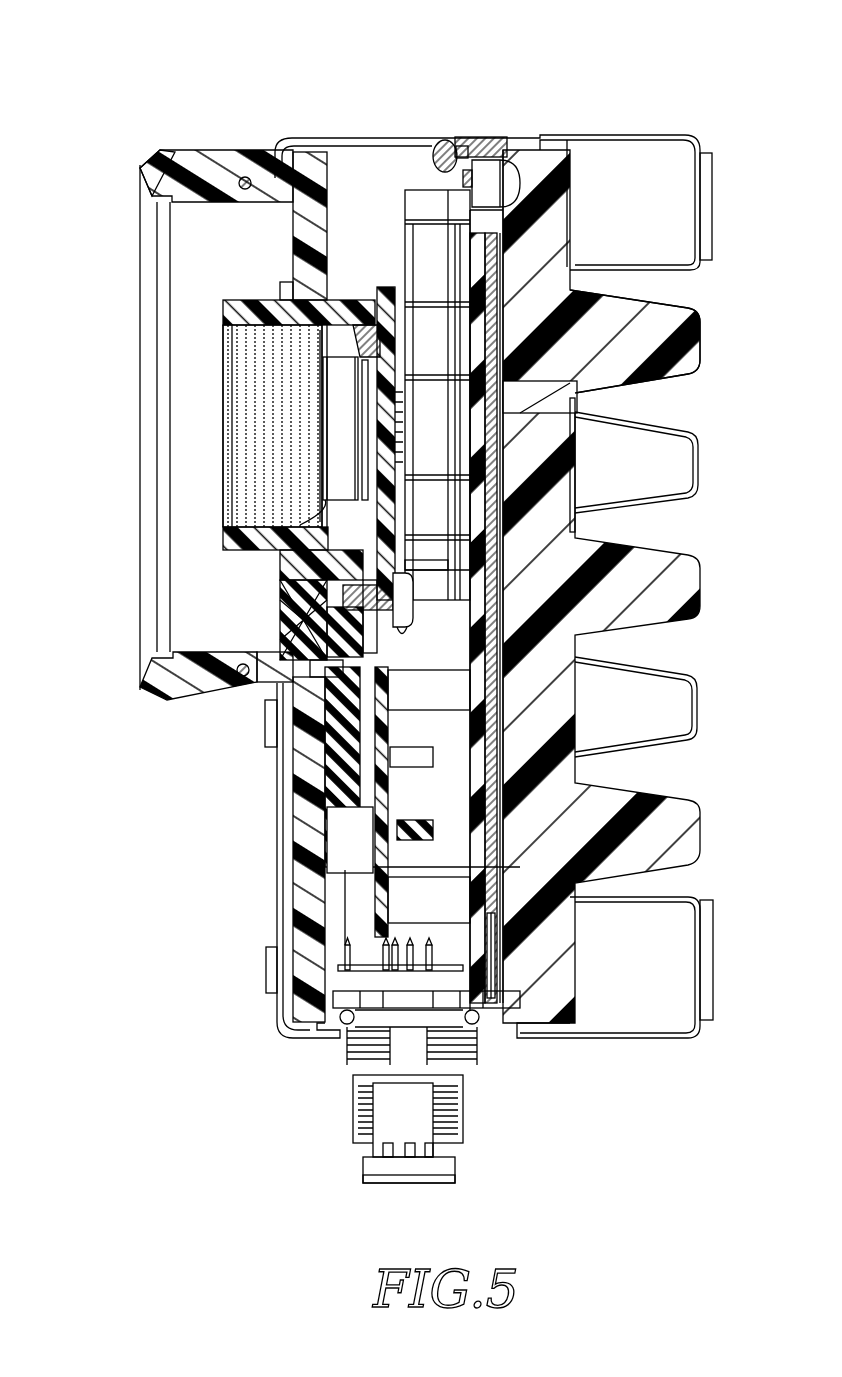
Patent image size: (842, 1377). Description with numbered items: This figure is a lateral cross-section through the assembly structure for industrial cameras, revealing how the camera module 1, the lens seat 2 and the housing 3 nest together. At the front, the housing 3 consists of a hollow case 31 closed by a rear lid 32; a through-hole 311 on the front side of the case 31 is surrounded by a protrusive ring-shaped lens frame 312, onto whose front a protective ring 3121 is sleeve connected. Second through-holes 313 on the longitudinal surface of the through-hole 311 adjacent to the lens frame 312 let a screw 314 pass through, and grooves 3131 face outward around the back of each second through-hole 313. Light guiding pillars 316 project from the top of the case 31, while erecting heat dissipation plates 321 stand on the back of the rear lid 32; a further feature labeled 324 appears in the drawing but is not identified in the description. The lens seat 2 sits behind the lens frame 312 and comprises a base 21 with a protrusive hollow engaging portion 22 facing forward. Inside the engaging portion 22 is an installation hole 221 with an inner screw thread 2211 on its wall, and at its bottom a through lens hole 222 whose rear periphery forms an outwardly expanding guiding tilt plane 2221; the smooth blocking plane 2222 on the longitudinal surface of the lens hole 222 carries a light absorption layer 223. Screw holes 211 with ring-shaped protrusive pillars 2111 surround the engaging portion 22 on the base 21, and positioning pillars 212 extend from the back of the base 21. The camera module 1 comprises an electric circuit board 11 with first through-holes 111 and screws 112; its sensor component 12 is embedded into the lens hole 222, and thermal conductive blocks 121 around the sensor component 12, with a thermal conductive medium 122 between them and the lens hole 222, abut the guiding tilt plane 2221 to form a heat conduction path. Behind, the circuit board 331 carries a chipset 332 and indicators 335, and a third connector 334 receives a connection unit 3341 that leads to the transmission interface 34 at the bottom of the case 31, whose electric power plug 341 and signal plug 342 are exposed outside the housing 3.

The camera module 1 is at (448, 439).
The electric circuit board 11 is at (577, 458).
The first through-holes 111 is at (448, 563).
The screws 112 is at (425, 605).
The sensor component 12 is at (228, 372).
The thermal conductive blocks 121 is at (358, 335).
The thermal conductive medium 122 is at (340, 322).
The lens seat 2 is at (406, 471).
The base 21 is at (346, 288).
The screw holes 211 is at (212, 620).
The ring-shaped protrusive pillars 2111 is at (330, 603).
The positioning pillars 212 is at (410, 645).
The engaging portion 22 is at (300, 322).
The installation hole 221 is at (148, 426).
The inner screw thread 2211 is at (248, 468).
The lens hole 222 is at (194, 431).
The guiding tilt plane 2221 is at (330, 490).
The blocking plane 2222 is at (325, 520).
The light absorption layer 223 is at (290, 552).
The housing 3 is at (416, 615).
The case 31 is at (392, 158).
The through-hole 311 is at (289, 279).
The lens frame 312 is at (201, 149).
The protective ring 3121 is at (167, 162).
The second through-holes 313 is at (202, 703).
The grooves 3131 is at (292, 680).
The screw 314 is at (230, 673).
The light guiding pillars 316 is at (446, 141).
The rear lid 32 is at (636, 571).
The heat dissipation plates 321 is at (670, 323).
The locking block 324 is at (475, 172).
The circuit board 331 is at (490, 400).
The chipset 332 is at (575, 530).
The third connector 334 is at (557, 663).
The connection unit 3341 is at (493, 1000).
The indicators 335 is at (467, 146).
The transmission interface 34 is at (487, 1105).
The electric power plug 341 is at (440, 1163).
The signal plug 342 is at (462, 1112).